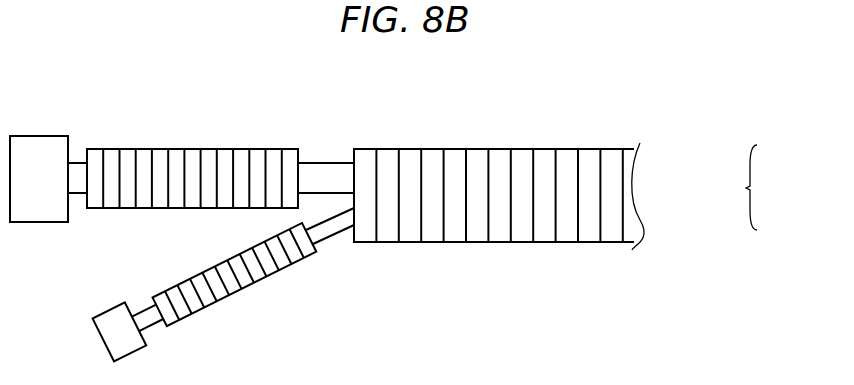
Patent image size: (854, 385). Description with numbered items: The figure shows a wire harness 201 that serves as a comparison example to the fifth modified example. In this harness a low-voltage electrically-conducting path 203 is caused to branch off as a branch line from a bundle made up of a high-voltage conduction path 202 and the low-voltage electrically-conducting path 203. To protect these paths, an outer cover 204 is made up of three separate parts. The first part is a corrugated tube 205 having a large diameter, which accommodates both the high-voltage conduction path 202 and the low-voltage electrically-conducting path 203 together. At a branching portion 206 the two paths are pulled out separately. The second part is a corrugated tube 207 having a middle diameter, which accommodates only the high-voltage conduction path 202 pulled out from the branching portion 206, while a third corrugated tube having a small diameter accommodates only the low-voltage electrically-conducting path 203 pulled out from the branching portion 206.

The wire harness 201 is at (442, 123).
The high-voltage conduction path 202 is at (317, 170).
The low-voltage electrically-conducting path 203 is at (331, 232).
The outer cover 204 is at (752, 188).
The corrugated tube 205 is at (543, 165).
The branching portion 206 is at (285, 213).
The corrugated tube 207 is at (176, 162).